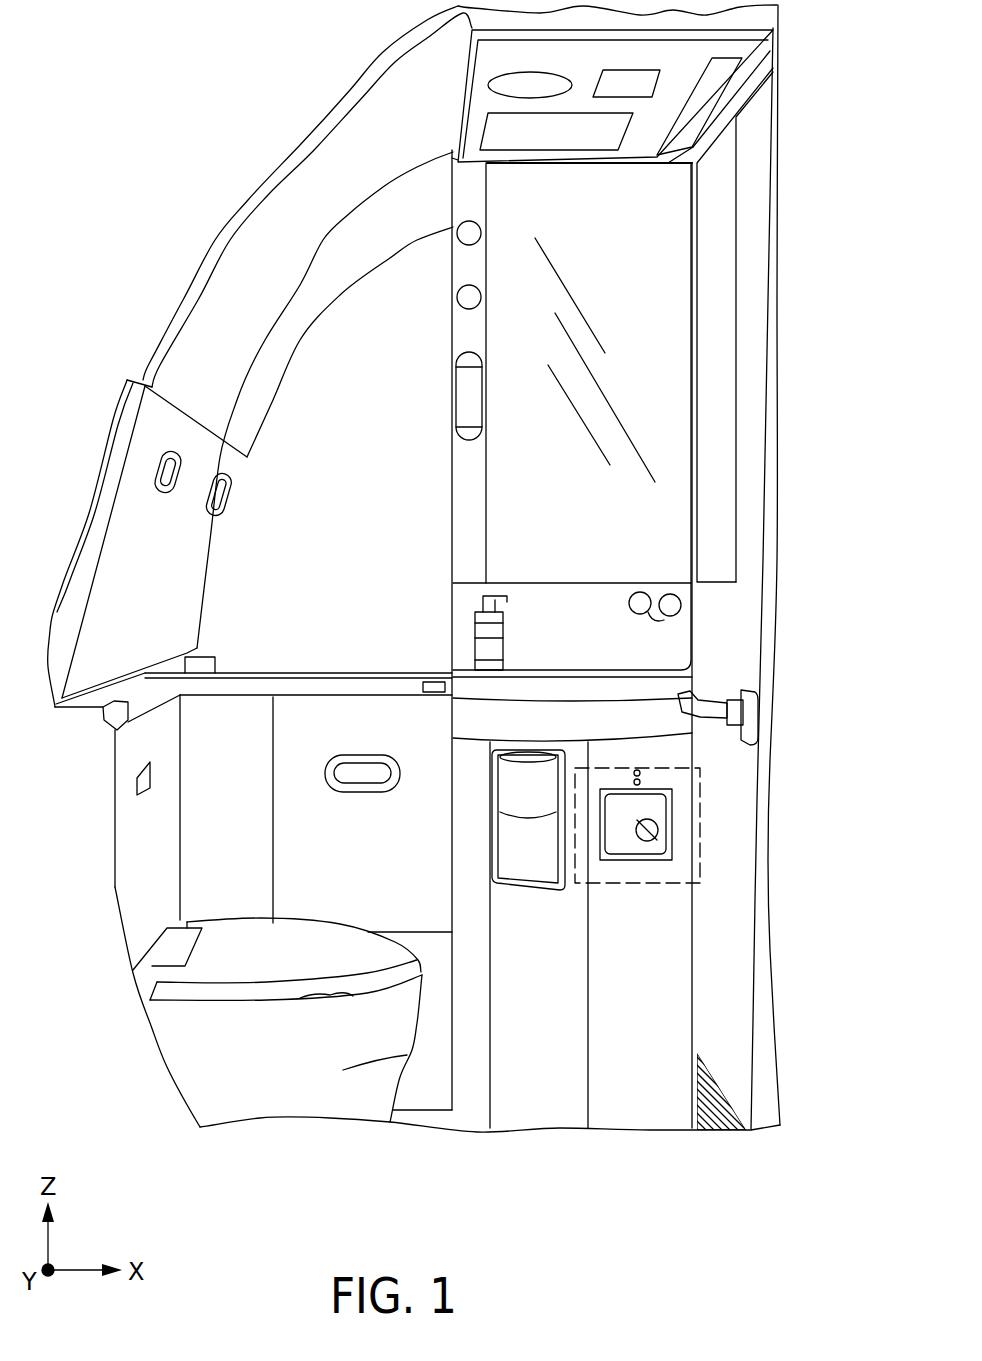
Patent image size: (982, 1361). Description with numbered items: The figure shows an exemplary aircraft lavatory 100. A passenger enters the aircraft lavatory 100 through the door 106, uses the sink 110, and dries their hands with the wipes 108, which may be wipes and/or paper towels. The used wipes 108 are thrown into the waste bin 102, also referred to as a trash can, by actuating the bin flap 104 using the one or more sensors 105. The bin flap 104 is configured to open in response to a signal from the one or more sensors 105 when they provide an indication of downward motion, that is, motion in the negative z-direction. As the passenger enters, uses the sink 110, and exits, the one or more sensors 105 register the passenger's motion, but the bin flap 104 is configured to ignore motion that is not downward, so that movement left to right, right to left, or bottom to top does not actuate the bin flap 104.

The aircraft lavatory 100 is at (475, 608).
The waste bin 102 is at (740, 893).
The bin flap 104 is at (655, 830).
The sensors 105 is at (647, 782).
The door 106 is at (728, 656).
The wipes 108 is at (533, 868).
The sink 110 is at (660, 655).